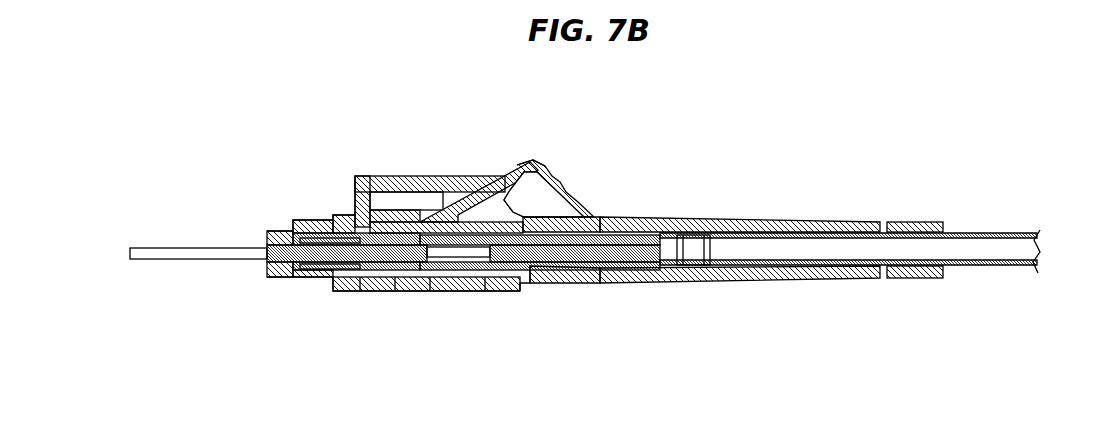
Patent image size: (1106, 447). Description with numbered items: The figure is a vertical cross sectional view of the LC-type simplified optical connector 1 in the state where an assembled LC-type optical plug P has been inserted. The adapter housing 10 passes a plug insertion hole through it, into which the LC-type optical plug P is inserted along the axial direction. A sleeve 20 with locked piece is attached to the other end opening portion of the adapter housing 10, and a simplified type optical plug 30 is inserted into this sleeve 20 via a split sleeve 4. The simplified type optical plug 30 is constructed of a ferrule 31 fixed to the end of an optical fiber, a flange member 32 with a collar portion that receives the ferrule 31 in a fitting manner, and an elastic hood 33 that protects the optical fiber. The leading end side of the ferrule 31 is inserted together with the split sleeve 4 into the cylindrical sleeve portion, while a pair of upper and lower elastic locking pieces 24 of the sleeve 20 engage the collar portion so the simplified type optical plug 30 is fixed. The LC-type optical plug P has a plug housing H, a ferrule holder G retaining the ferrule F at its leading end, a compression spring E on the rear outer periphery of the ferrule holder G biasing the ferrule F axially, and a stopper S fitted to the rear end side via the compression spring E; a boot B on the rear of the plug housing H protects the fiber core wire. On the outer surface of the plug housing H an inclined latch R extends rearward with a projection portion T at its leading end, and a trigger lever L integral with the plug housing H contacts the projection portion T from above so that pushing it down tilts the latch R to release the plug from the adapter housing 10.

The LC-type simplified optical connector 1 is at (356, 155).
The split sleeve 4 is at (352, 215).
The adapter housing 10 is at (418, 176).
The sleeve with locked piece 20 is at (311, 213).
The elastic locking piece 24 is at (284, 226).
The simplified type optical plug 30 is at (260, 234).
The ferrule 31 is at (330, 281).
The flange member 32 is at (290, 277).
The hood 33 is at (262, 262).
The latch R is at (483, 172).
The projection portion T is at (512, 163).
The trigger lever L is at (548, 166).
The boot B is at (666, 218).
The LC-type optical plug P is at (808, 206).
The stopper S is at (565, 284).
The compression spring E is at (486, 291).
The ferrule F is at (361, 291).
The ferrule holder G is at (431, 291).
The plug housing H is at (396, 291).